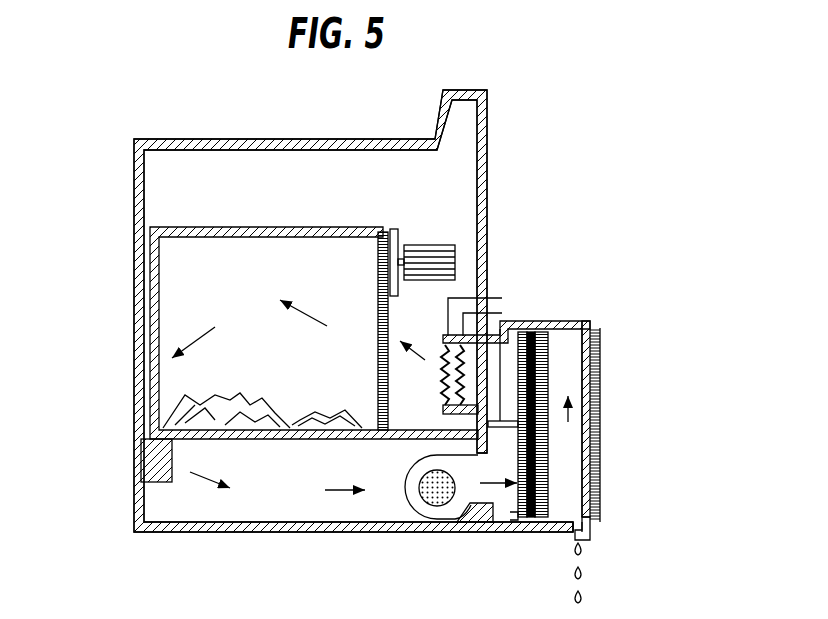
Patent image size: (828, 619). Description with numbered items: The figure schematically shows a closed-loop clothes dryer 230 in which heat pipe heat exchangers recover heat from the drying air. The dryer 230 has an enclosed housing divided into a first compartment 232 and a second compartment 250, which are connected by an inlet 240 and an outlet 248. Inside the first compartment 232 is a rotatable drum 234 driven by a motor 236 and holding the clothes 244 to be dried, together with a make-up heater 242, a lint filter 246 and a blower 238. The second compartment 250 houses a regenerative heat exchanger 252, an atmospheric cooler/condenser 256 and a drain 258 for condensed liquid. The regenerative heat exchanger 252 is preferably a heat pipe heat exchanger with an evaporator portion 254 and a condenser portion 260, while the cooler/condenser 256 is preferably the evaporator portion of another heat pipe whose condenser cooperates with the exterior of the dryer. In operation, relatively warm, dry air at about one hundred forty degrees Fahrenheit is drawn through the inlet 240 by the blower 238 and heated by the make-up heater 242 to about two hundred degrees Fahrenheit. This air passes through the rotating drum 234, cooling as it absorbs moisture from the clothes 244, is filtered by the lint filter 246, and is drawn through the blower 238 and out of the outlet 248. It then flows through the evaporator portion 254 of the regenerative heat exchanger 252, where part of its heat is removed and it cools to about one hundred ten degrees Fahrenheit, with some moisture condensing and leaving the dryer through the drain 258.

The clothes dryer 230 is at (490, 247).
The first compartment 232 is at (515, 128).
The rotatable drum 234 is at (215, 227).
The motor 236 is at (431, 245).
The blower 238 is at (432, 500).
The inlet 240 is at (523, 322).
The make-up heater 242 is at (438, 342).
The clothes 244 is at (221, 408).
The lint filter 246 is at (150, 466).
The outlet 248 is at (490, 524).
The second compartment 250 is at (580, 322).
The regenerative heat exchanger 252 is at (525, 525).
The evaporator portion 254 is at (595, 452).
The atmospheric cooler/condenser 256 is at (595, 478).
The drain 258 is at (588, 540).
The condenser portion 260 is at (600, 340).